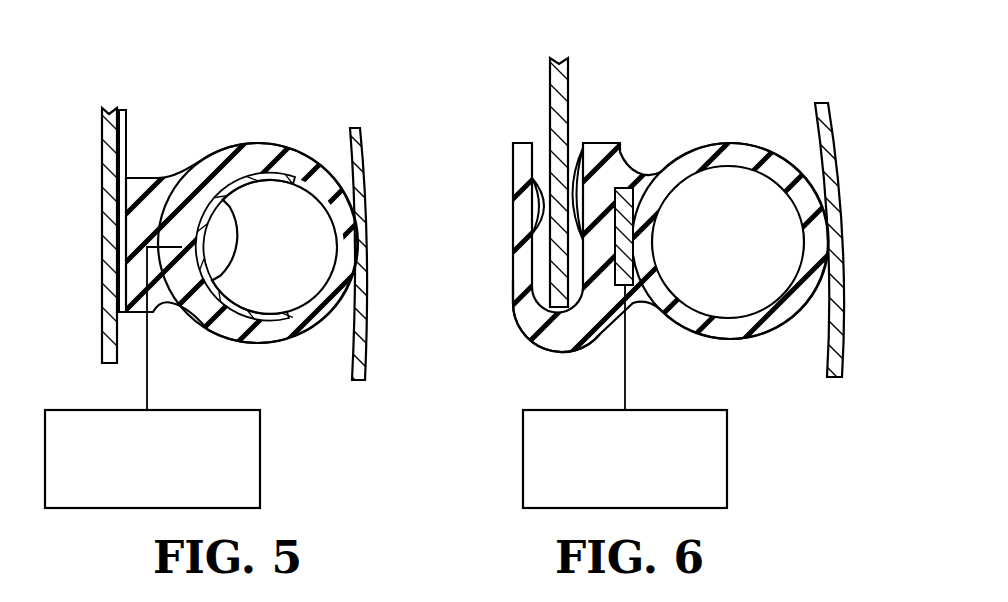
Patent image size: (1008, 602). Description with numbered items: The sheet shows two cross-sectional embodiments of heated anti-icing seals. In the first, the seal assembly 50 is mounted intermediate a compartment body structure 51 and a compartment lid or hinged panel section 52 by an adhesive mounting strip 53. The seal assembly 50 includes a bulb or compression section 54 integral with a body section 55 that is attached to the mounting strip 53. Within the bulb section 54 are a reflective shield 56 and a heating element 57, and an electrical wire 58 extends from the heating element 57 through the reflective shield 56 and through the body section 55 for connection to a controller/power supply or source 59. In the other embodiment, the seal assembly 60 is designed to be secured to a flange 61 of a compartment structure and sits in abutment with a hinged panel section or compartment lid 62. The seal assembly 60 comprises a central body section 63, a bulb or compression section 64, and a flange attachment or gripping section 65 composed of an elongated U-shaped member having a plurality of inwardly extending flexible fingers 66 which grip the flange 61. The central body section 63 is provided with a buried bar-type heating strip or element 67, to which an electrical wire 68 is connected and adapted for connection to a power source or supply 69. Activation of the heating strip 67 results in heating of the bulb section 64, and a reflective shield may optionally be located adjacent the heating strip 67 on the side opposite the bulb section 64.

In FIG. 5, the seal assembly 50 is at (257, 128).
In FIG. 5, the compartment body structure 51 is at (103, 128).
In FIG. 5, the compartment lid or hinged panel section 52 is at (364, 142).
In FIG. 5, the adhesive mounting strip 53 is at (123, 176).
In FIG. 5, the bulb or compression section 54 is at (302, 167).
In FIG. 5, the body section 55 is at (153, 203).
In FIG. 5, the reflective shield 56 is at (240, 177).
In FIG. 5, the heating element 57 is at (200, 233).
In FIG. 5, the electrical wire 58 is at (147, 363).
In FIG. 5, the controller/power supply or source 59 is at (262, 450).
In FIG. 6, the seal assembly 60 is at (731, 107).
In FIG. 6, the flange 61 is at (568, 80).
In FIG. 6, the hinged panel section or compartment lid 62 is at (830, 120).
In FIG. 6, the central body section 63 is at (615, 173).
In FIG. 6, the bulb or compression section 64 is at (747, 153).
In FIG. 6, the flange attachment or gripping section 65 is at (533, 323).
In FIG. 6, the flexible fingers 66 is at (572, 152).
In FIG. 6, the heating strip or element 67 is at (622, 233).
In FIG. 6, the electrical wire 68 is at (630, 380).
In FIG. 6, the power source or supply 69 is at (728, 440).